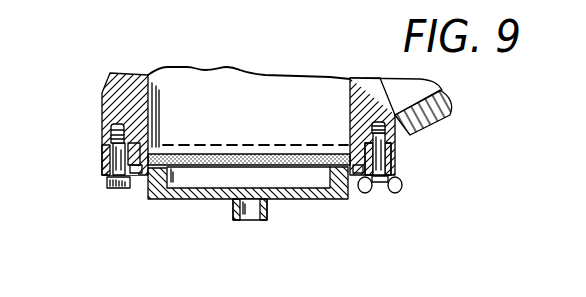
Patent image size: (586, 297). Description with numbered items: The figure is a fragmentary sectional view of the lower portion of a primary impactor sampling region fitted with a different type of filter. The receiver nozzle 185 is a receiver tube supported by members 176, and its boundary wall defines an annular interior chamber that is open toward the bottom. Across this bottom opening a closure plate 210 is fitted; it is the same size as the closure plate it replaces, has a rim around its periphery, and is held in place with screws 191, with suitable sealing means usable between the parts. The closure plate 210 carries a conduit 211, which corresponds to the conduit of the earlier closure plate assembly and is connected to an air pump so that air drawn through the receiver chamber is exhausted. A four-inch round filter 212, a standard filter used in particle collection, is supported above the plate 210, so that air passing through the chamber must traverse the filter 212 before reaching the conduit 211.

The members 176 is at (437, 127).
The receiver nozzle 185 is at (108, 90).
The screws 191 is at (400, 192).
The closure plate 210 is at (148, 195).
The conduit 211 is at (267, 218).
The four-inch round filter 212 is at (243, 153).